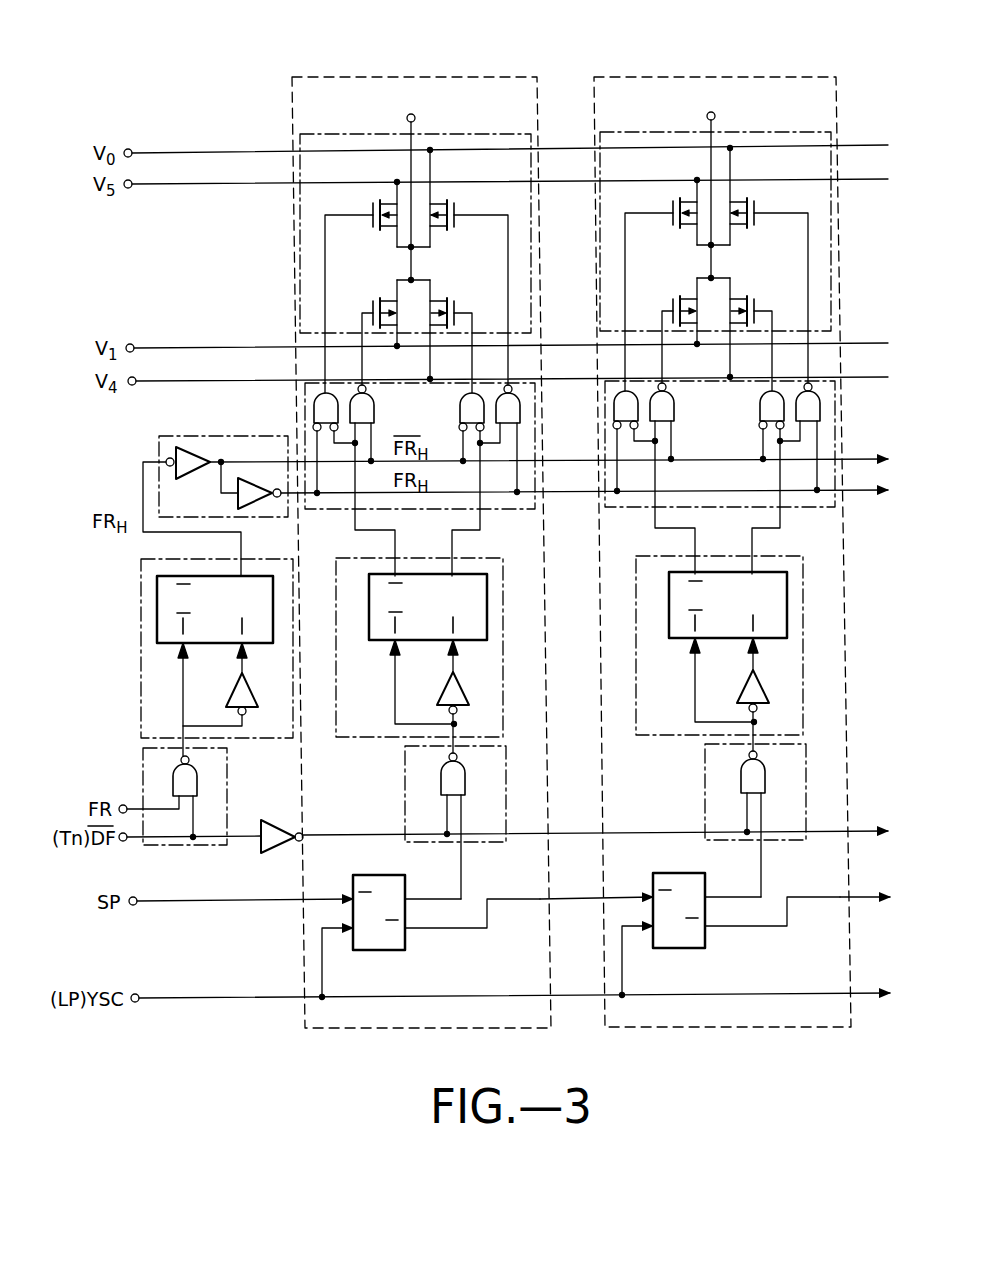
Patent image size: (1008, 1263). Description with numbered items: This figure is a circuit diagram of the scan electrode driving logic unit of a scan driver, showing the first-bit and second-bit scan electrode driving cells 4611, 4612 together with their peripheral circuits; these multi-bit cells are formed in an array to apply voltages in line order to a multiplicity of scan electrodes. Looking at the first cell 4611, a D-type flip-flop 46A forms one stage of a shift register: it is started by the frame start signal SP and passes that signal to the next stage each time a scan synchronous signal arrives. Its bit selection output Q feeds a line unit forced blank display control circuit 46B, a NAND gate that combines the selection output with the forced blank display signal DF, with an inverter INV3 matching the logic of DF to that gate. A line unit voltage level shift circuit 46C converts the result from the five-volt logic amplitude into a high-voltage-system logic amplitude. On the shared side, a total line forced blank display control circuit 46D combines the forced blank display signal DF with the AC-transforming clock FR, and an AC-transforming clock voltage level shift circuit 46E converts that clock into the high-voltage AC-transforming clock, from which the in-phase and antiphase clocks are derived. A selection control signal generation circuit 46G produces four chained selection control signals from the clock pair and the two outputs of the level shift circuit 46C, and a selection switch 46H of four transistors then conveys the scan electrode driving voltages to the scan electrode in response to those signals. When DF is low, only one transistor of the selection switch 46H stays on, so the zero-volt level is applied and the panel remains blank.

The scan electrode driving cell 4611 is at (427, 77).
The scan electrode driving cell 4612 is at (711, 77).
The selection switch 46H is at (572, 256).
The selection control signal generation circuit 46G is at (537, 421).
The line unit voltage level shift circuit 46C is at (503, 656).
The line unit forced blank display control circuit 46B is at (506, 769).
The D-type flip-flop 46A is at (405, 935).
The total line forced blank display control circuit 46D is at (228, 775).
The AC-transforming clock voltage level shift circuit 46E is at (141, 606).
The inverter INV3 is at (280, 859).